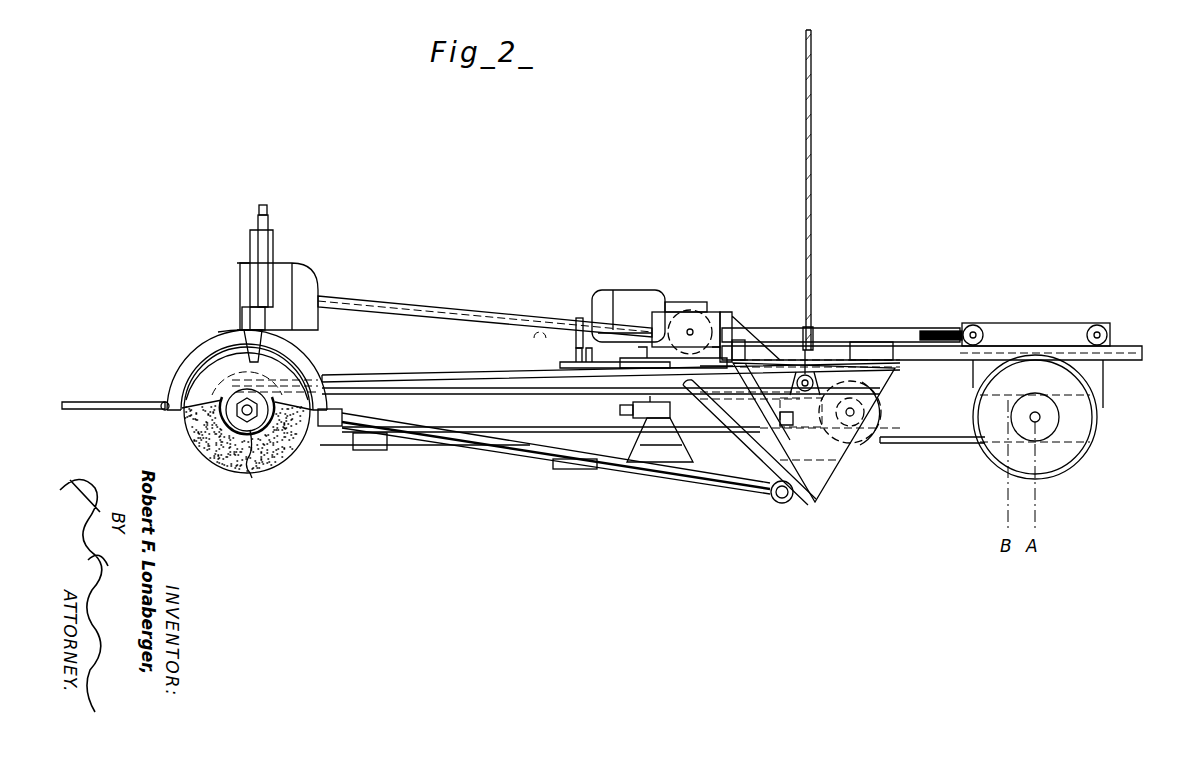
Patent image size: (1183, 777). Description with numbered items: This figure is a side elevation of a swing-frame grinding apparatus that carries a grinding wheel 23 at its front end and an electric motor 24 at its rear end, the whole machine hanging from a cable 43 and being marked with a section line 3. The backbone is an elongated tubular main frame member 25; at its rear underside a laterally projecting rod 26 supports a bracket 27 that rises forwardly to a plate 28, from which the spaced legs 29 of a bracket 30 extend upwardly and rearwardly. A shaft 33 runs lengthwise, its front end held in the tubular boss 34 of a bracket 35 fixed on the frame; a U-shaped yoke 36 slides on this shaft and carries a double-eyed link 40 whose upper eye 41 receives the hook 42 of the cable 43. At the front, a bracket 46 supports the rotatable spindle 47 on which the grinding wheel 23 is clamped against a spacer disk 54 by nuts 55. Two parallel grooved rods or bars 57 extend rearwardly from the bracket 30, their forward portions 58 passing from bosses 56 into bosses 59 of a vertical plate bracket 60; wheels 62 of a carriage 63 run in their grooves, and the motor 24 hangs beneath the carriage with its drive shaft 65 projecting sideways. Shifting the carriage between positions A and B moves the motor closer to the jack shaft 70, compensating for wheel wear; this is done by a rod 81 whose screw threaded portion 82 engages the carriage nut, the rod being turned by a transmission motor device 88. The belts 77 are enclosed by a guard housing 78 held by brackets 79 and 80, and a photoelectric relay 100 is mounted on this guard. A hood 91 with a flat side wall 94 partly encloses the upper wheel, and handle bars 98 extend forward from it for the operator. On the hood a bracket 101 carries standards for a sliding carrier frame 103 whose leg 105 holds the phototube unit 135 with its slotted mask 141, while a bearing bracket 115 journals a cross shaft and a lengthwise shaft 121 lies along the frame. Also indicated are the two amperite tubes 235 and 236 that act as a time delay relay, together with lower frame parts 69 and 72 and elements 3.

The section line 3- 3 is at (252, 516).
The grinding wheel 23 is at (222, 455).
The electric motor 24 is at (1070, 460).
The main frame member 25 is at (520, 452).
The rod 26 is at (776, 503).
The bracket 27 is at (738, 462).
The plate 28 is at (812, 505).
The legs 29 is at (846, 466).
The bracket 30 is at (870, 372).
The shaft 33 is at (626, 411).
The tubular boss 34 is at (660, 400).
The bracket 35 is at (655, 450).
The U-shaped yoke 36 is at (790, 402).
The double-eyed link 40 is at (798, 384).
The upper eye 41 is at (812, 372).
The hook 42 is at (803, 338).
The cable 43 is at (813, 118).
The bracket 46 is at (330, 430).
The spindle 47 is at (232, 428).
The spacer disk 54 is at (252, 478).
The nuts 55 is at (234, 414).
The bosses 56 is at (870, 342).
The rods or bars 57 is at (984, 354).
The portions of the rods 58 is at (748, 344).
The bosses 59 is at (742, 340).
The bracket 60 is at (726, 312).
The wheels 62 is at (982, 328).
The carriage 63 is at (1040, 328).
The drive shaft 65 is at (1040, 417).
The lower frame member 69 is at (950, 446).
The jack shaft 70 is at (856, 412).
The frame rail top 72 is at (764, 370).
The belts 77 is at (530, 395).
The guard housing 78 is at (426, 374).
The bracket 79 is at (372, 452).
The bracket 80 is at (575, 472).
The rod 81 is at (846, 328).
The screw threaded portion 82 is at (950, 330).
The transmission motor device 88 is at (632, 300).
The hood 91 is at (200, 352).
The flat side wall 94 is at (205, 380).
The handle bars 98 is at (80, 398).
The photoelectric relay 100 is at (526, 347).
The bracket 101 is at (222, 330).
The carrier frame 103 is at (256, 243).
The leg 105 is at (250, 272).
The bearing bracket 115 is at (305, 284).
The shaft 121 is at (400, 300).
The phototube unit 135 is at (262, 320).
The mask or slot unit device 141 is at (257, 345).
The amperite tube 235 is at (574, 324).
The amperite tube 236 is at (590, 348).